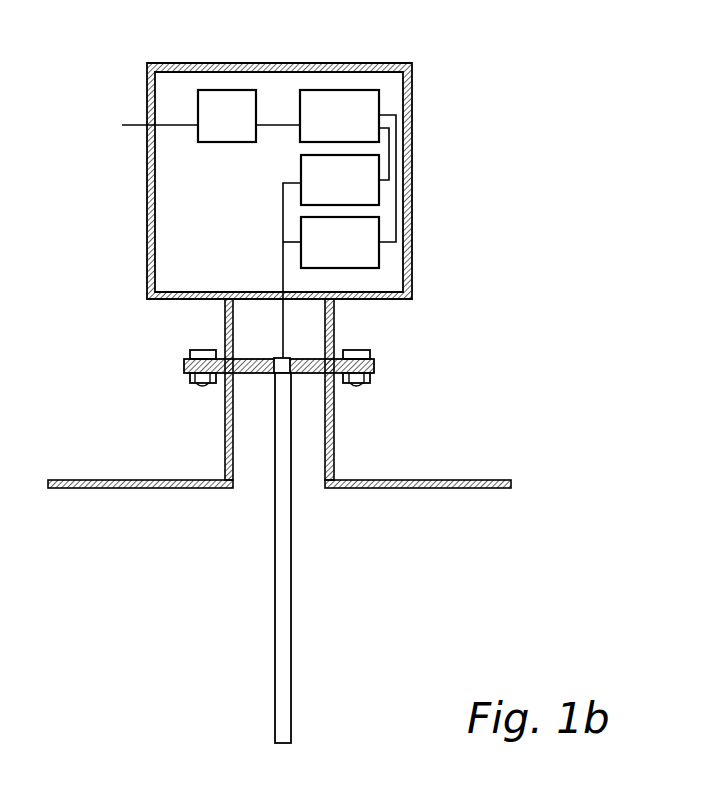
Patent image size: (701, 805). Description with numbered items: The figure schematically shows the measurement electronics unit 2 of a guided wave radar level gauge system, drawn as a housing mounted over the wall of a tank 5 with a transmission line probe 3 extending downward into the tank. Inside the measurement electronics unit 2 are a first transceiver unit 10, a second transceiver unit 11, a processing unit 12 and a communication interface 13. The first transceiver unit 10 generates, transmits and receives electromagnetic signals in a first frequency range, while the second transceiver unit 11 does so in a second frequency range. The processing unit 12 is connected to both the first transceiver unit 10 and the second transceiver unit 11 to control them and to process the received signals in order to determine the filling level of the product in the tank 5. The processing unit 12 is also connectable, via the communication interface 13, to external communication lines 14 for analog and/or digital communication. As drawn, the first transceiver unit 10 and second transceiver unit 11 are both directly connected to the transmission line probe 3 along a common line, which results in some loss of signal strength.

The measurement electronics unit 2 is at (442, 86).
The transmission line probe 3 is at (283, 593).
The tank 5 is at (443, 479).
The first transceiver unit 10 is at (301, 163).
The second transceiver unit 11 is at (380, 256).
The processing unit 12 is at (341, 90).
The communication interface 13 is at (222, 90).
The external communication lines 14 is at (132, 125).